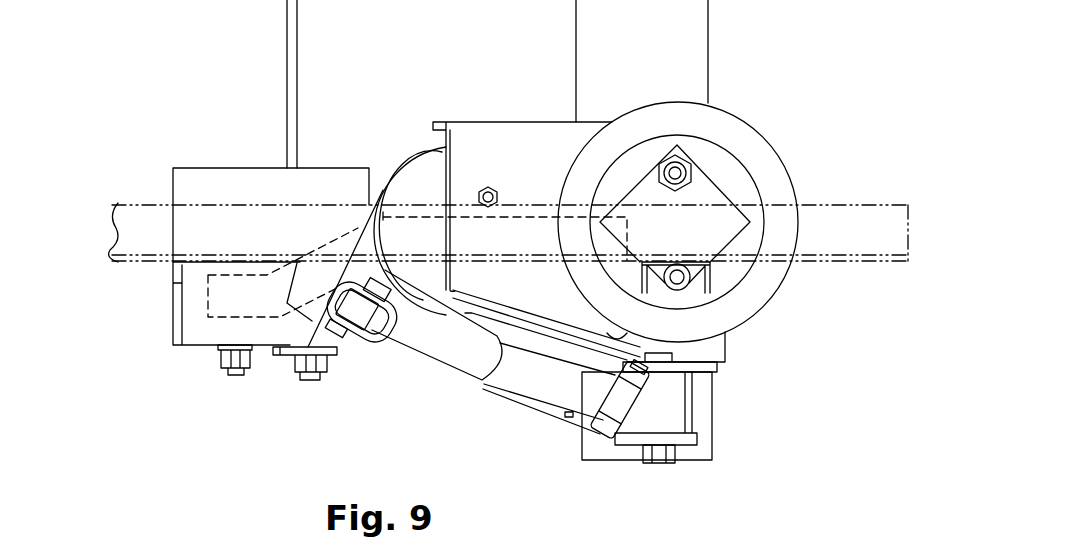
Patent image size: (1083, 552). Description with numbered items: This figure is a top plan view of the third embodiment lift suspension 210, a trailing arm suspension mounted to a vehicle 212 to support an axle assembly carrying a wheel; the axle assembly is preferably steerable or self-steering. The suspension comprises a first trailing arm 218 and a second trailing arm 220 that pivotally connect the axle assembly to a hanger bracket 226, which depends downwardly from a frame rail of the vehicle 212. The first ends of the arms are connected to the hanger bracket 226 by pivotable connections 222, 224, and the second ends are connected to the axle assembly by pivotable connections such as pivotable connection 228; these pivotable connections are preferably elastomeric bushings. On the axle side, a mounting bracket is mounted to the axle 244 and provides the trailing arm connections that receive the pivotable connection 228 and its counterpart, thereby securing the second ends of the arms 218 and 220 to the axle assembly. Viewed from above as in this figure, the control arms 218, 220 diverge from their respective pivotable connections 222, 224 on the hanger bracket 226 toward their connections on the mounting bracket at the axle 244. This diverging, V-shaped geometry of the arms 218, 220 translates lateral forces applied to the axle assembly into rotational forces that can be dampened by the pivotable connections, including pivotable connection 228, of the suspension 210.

The lift suspension 210 is at (814, 70).
The vehicle 212 is at (862, 205).
The first trailing arm 218 is at (513, 400).
The second trailing arm 220 is at (382, 190).
The pivotable connection 222 is at (663, 453).
The pivotable connection 224 is at (309, 383).
The hanger bracket 226 is at (174, 329).
The pivotable connection 228 is at (233, 372).
The axle 244 is at (611, 450).